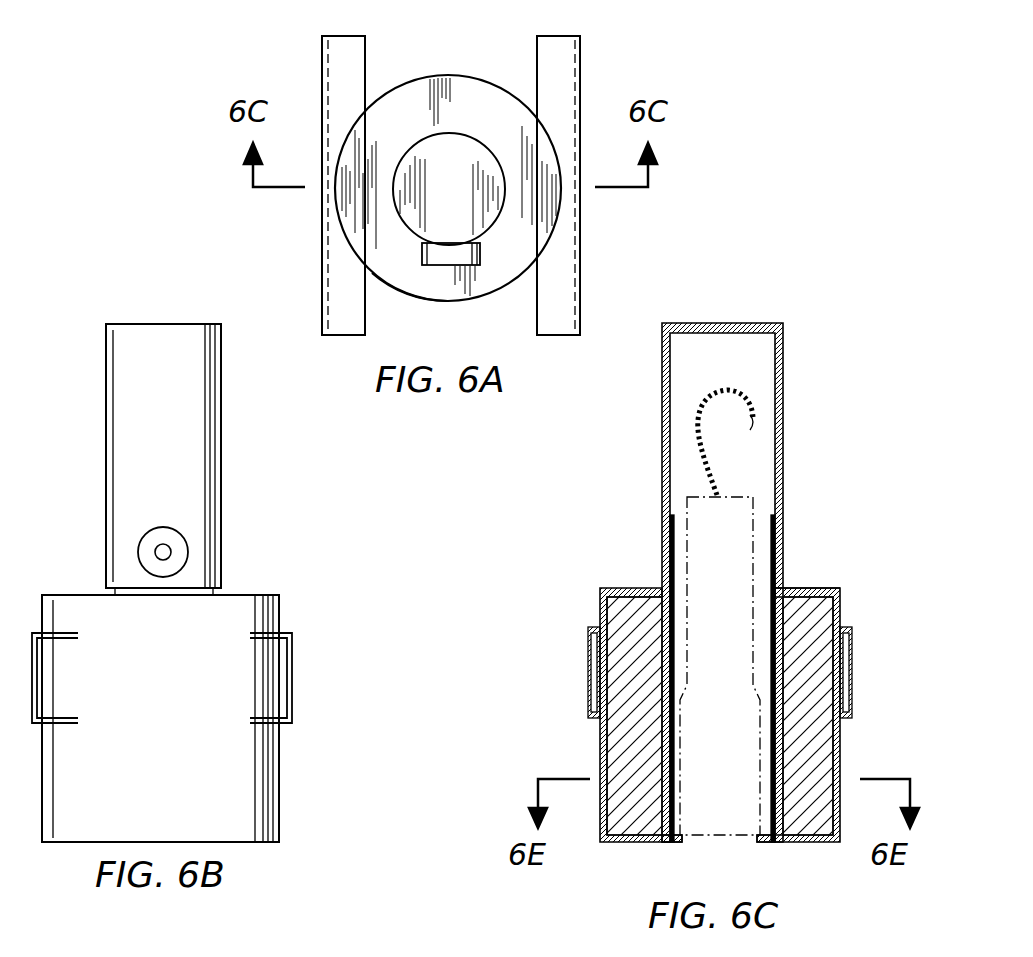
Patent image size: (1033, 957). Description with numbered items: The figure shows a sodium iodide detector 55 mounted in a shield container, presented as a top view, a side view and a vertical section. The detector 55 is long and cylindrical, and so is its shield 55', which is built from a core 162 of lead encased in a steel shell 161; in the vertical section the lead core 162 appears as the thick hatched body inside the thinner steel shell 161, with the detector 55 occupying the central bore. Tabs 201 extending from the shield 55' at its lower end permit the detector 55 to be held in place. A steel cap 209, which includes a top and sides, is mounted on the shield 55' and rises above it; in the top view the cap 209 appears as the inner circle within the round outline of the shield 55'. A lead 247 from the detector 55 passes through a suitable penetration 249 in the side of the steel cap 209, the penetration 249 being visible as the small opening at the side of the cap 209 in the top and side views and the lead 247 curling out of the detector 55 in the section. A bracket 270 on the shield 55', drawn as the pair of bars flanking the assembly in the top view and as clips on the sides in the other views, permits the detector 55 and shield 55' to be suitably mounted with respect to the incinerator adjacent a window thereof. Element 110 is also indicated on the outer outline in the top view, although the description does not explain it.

In FIG. 6A, the shield 55' is at (448, 159).
In FIG. 6B, the shield 55' is at (179, 575).
In FIG. 6C, the shield 55' is at (831, 562).
In FIG. 6C, the sodium iodide detector 55 is at (717, 726).
In FIG. 6A, the disc 110 is at (426, 300).
In FIG. 6B, the steel shell 161 is at (280, 771).
In FIG. 6C, the steel shell 161 is at (633, 588).
In FIG. 6C, the core 162 is at (622, 608).
In FIG. 6C, the tabs 201 is at (690, 844).
In FIG. 6A, the steel cap 209 is at (456, 134).
In FIG. 6B, the steel cap 209 is at (222, 395).
In FIG. 6C, the steel cap 209 is at (662, 410).
In FIG. 6B, the lead 247 is at (171, 552).
In FIG. 6C, the lead 247 is at (733, 390).
In FIG. 6A, the penetration 249 is at (481, 247).
In FIG. 6B, the penetration 249 is at (178, 529).
In FIG. 6A, the bracket 270 is at (581, 72).
In FIG. 6B, the bracket 270 is at (31, 638).
In FIG. 6C, the bracket 270 is at (588, 652).